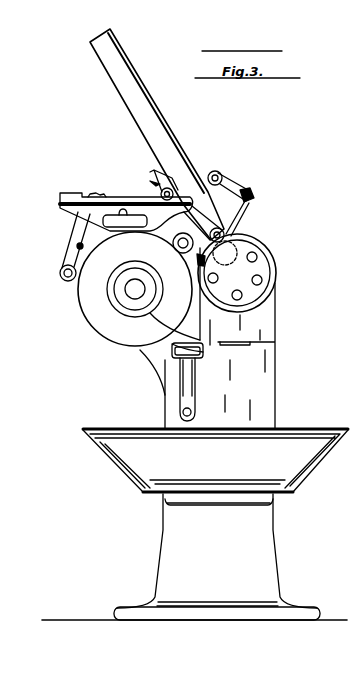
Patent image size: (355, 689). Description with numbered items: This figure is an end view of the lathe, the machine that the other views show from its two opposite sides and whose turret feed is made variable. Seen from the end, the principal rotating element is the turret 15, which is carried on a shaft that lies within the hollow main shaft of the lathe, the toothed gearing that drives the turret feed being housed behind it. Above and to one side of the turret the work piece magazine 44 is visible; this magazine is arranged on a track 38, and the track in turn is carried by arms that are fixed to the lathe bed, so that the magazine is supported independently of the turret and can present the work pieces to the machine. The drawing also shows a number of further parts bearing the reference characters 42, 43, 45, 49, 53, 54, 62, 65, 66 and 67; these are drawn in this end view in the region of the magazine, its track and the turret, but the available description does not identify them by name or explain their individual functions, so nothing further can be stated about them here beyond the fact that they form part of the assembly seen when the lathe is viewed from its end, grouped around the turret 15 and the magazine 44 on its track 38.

The turret 15 is at (260, 267).
The track 38 is at (190, 220).
The stop 42 is at (133, 195).
The plate 43 is at (126, 212).
The work piece magazine 44 is at (168, 129).
The bracket 45 is at (143, 182).
The link 49 is at (82, 236).
The cap 53 is at (119, 225).
The pivot 54 is at (65, 285).
The pivot pin 62 is at (214, 171).
The link 65 is at (228, 181).
The link 66 is at (245, 205).
The bolt 67 is at (253, 192).